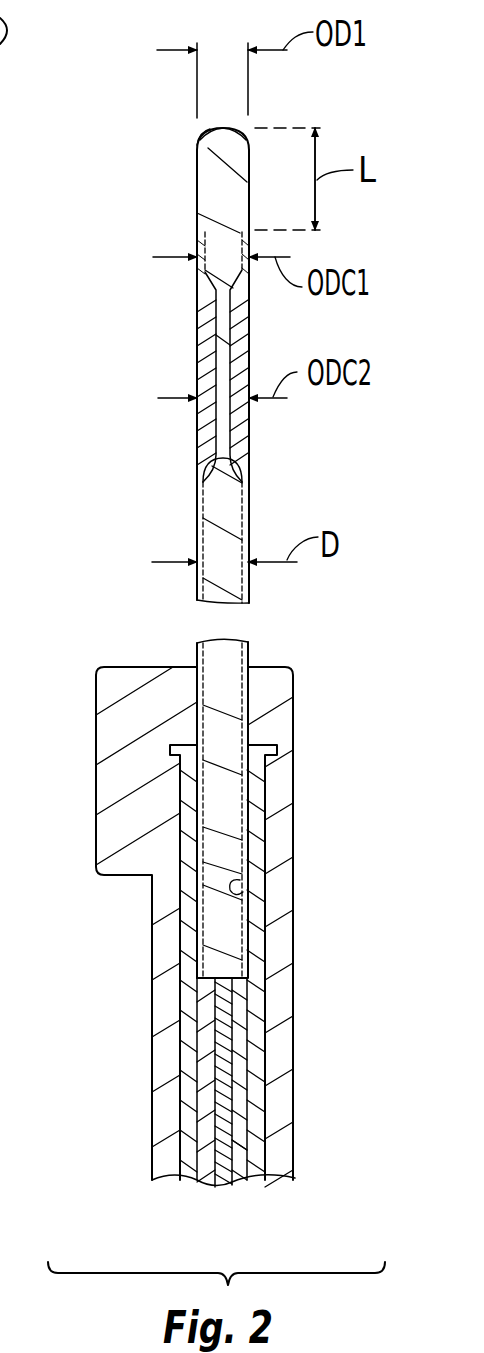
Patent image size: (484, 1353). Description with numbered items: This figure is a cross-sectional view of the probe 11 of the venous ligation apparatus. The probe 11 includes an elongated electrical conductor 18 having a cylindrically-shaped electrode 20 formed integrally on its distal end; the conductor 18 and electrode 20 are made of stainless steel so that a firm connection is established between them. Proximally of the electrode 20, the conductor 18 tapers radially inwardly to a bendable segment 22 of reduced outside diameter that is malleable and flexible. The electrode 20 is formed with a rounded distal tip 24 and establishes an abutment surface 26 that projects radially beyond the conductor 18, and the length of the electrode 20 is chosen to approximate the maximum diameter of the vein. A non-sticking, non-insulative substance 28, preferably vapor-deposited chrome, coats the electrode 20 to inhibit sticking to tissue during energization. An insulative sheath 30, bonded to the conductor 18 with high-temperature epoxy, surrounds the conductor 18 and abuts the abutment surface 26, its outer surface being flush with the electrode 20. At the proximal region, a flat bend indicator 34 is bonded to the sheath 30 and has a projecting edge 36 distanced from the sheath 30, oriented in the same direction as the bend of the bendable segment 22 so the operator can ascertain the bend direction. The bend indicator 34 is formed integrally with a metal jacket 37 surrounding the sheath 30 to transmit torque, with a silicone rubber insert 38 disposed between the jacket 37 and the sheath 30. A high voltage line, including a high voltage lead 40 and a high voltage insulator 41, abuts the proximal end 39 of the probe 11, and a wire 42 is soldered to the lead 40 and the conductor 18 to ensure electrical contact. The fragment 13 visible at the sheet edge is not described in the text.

The probe 11 is at (268, 588).
The catheter 13 is at (19, 92).
The electrical conductor 18 is at (223, 513).
The electrode 20 is at (210, 150).
The bendable segment 22 is at (200, 427).
The rounded distal tip 24 is at (223, 128).
The abutment surface 26 is at (200, 225).
The non-sticking, non-insulative substance 28 is at (198, 133).
The insulative sheath 30 is at (249, 443).
The bend indicator 34 is at (108, 692).
The projecting edge 36 is at (95, 755).
The metal jacket 37 is at (162, 947).
The insert 38 is at (192, 797).
The proximal end 39 is at (223, 972).
The high voltage lead 40 is at (222, 1165).
The high voltage insulator 41 is at (243, 1158).
The wire 42 is at (237, 875).